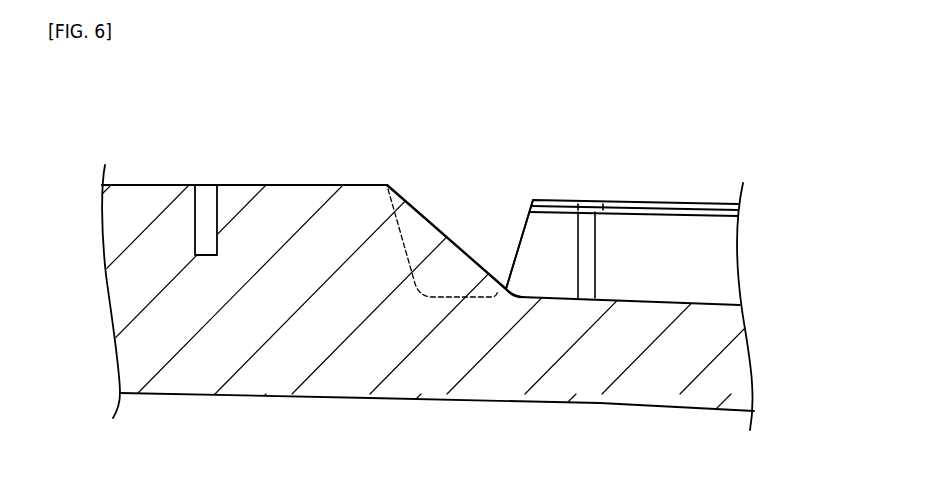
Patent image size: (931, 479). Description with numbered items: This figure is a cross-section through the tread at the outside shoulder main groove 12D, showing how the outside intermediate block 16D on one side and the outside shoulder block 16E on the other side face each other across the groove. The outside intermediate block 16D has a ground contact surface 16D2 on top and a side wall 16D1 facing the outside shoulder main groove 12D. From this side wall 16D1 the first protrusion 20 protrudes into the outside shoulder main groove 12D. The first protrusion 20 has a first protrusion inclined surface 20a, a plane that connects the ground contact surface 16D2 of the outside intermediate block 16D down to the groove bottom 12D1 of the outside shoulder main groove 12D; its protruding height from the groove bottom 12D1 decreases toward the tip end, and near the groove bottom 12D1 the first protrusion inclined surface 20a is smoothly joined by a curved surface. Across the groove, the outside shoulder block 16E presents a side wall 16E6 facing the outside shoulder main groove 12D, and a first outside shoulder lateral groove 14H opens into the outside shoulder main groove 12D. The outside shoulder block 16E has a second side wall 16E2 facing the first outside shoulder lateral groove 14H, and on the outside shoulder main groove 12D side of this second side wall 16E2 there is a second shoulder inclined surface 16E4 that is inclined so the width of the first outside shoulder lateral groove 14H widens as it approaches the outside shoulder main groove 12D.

The outside shoulder main groove 12D is at (472, 221).
The groove bottom 12D1 is at (478, 296).
The first outside shoulder lateral groove 14H is at (660, 300).
The outside intermediate block 16D is at (253, 233).
The side wall 16D1 is at (408, 236).
The ground contact surface 16D2 is at (320, 185).
The outside shoulder block 16E is at (638, 201).
The second side wall 16E2 is at (693, 240).
The second shoulder inclined surface 16E4 is at (545, 240).
The side wall 16E6 is at (526, 232).
The first protrusion 20 is at (435, 238).
The first protrusion inclined surface 20a is at (474, 260).